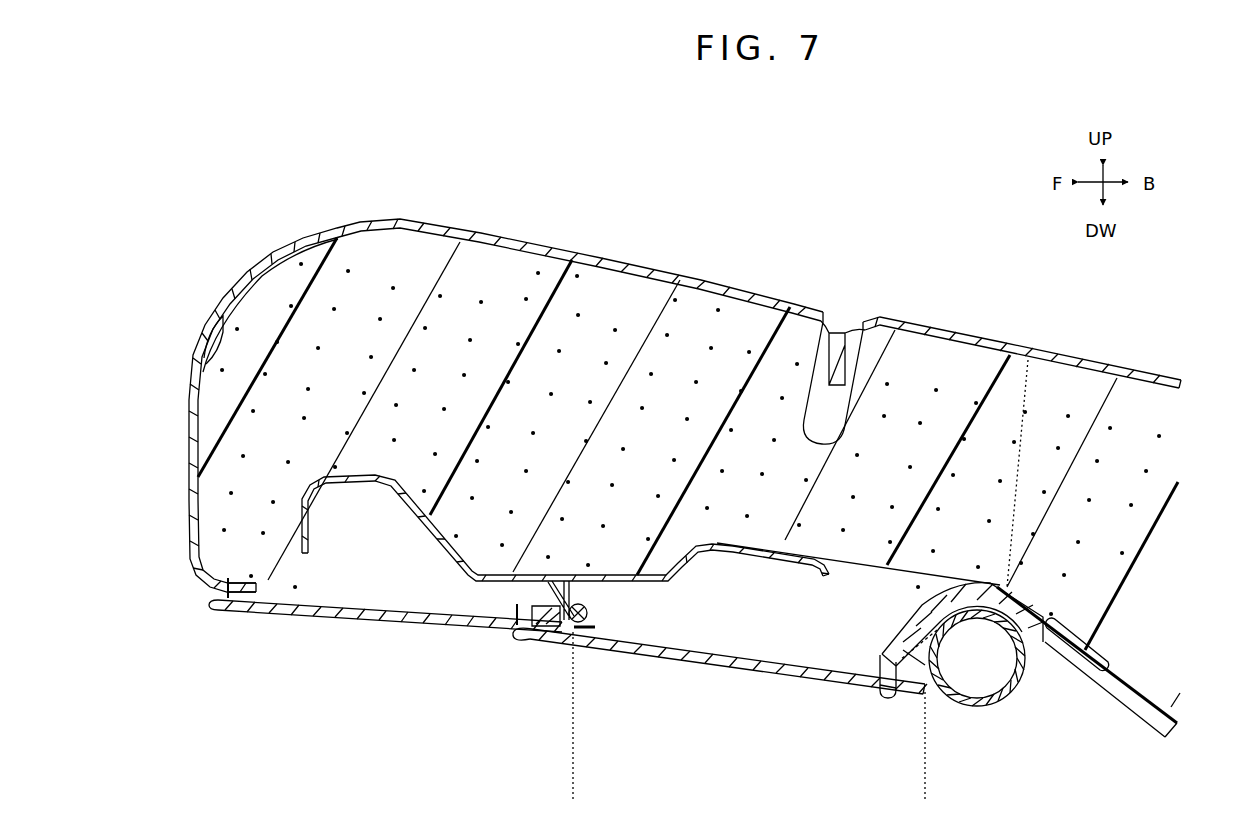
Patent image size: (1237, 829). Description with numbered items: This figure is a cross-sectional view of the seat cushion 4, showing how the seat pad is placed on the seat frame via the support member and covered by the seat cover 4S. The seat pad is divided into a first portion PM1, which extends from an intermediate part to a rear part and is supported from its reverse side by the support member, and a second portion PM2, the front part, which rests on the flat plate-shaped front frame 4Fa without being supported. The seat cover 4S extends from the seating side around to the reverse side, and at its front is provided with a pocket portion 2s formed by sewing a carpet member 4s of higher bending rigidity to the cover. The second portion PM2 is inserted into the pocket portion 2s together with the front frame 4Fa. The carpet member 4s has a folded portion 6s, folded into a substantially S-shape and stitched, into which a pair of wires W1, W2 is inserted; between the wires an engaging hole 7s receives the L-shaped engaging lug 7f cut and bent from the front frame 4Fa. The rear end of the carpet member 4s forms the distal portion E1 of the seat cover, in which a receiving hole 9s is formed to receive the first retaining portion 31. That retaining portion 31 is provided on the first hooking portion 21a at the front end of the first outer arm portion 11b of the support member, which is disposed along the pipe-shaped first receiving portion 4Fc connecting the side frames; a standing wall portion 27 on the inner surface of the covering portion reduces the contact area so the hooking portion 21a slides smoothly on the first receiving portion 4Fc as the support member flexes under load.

The seat cover 4S is at (627, 258).
The seat cushion 4 is at (835, 210).
The second portion PM2 is at (933, 374).
The first portion PM1 is at (1074, 386).
The pocket portion 2s is at (262, 616).
The carpet member 4s is at (363, 632).
The front frame 4Fa is at (468, 582).
The wire W1 is at (532, 608).
The wire W2 is at (590, 612).
The engaging lug 7f is at (596, 627).
The folded portion 6s is at (546, 645).
The engaging hole 7s is at (567, 634).
The first hooking portion 21a is at (906, 612).
The receiving hole 9s is at (878, 698).
The first retaining portion 31 is at (893, 700).
The standing wall portion 27 is at (931, 692).
The first receiving portion 4Fc is at (988, 708).
The first outer arm portion 11b is at (1126, 712).
The distal portion E1 is at (922, 778).